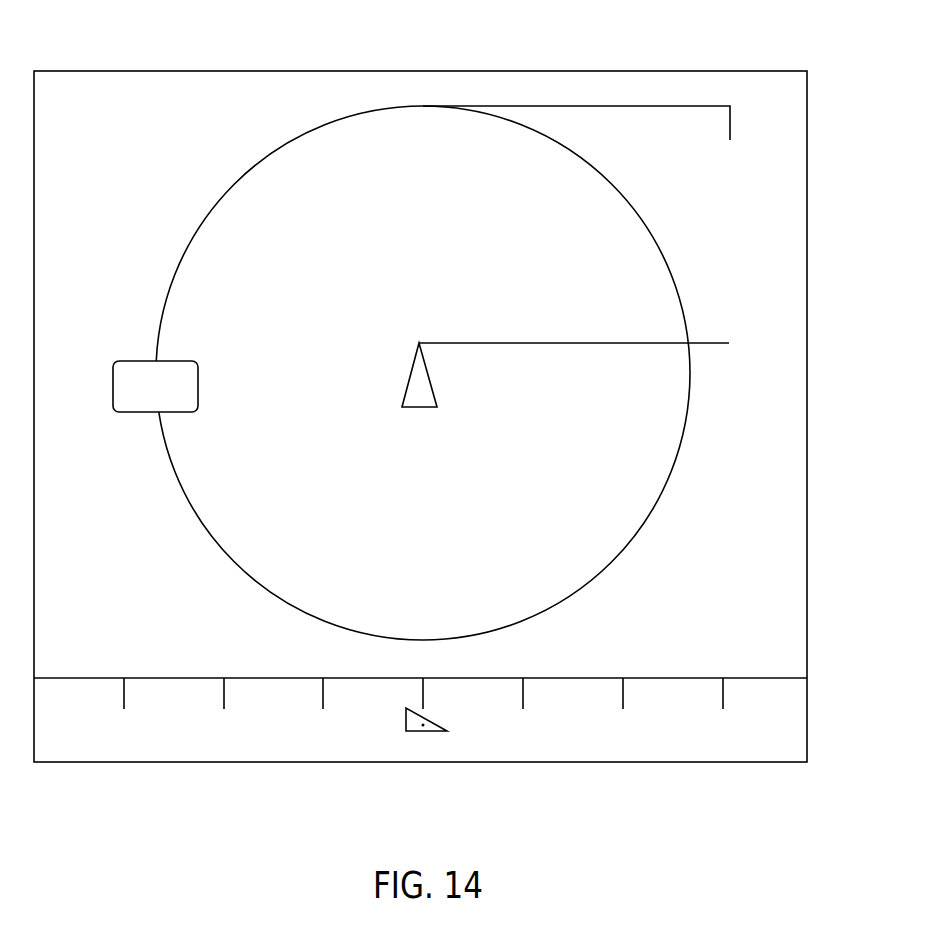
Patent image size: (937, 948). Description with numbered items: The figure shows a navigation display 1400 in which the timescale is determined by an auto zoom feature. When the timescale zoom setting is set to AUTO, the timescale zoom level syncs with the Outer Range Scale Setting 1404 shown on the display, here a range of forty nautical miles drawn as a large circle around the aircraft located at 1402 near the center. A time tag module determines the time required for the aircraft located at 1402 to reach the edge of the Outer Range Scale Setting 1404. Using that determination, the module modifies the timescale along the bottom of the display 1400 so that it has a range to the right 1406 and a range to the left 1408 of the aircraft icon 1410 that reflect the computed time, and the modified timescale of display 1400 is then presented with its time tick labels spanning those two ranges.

The navigation display 1400 is at (185, 71).
The aircraft location 1402 is at (729, 331).
The Outer Range Scale Setting 1404 is at (730, 140).
The range to the right 1406 is at (803, 787).
The range to the left 1408 is at (402, 787).
The aircraft icon 1410 is at (403, 724).